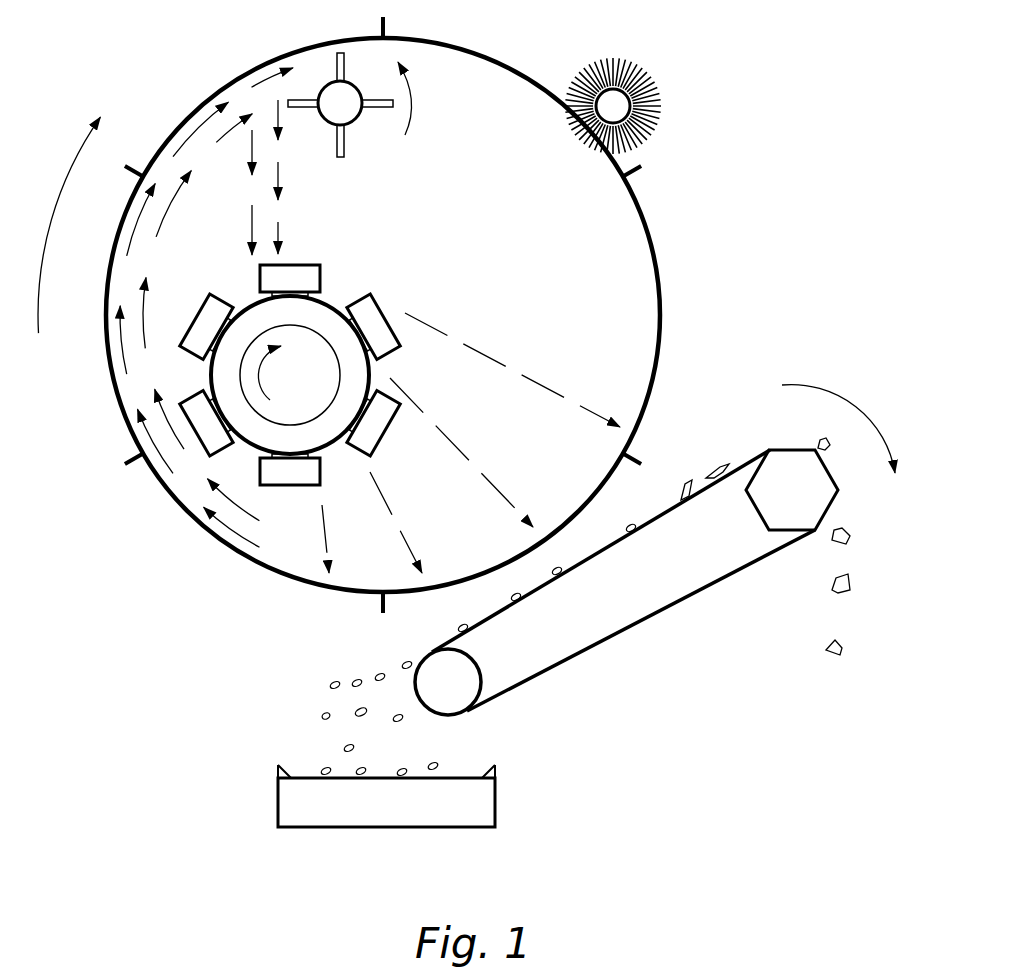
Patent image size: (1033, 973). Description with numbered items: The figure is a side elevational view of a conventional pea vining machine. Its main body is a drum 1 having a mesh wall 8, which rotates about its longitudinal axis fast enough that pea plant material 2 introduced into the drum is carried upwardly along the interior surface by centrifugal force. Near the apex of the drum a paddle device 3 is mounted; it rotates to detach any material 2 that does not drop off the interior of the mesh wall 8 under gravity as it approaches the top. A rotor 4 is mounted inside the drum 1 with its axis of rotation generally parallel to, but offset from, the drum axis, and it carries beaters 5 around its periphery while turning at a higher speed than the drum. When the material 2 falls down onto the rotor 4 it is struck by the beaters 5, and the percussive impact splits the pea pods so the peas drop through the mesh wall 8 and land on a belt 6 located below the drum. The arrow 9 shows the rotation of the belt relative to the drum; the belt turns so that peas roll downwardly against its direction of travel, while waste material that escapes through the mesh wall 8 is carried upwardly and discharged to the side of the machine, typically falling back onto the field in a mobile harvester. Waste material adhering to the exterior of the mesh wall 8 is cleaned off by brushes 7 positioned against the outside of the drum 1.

The drum 1 is at (468, 50).
The pea plant material 2 is at (243, 523).
The paddle device 3 is at (333, 92).
The rotor 4 is at (375, 407).
The beaters 5 is at (210, 443).
The belt 6 is at (613, 545).
The brushes 7 is at (620, 103).
The mesh wall 8 is at (207, 530).
The arrow 9 is at (838, 392).